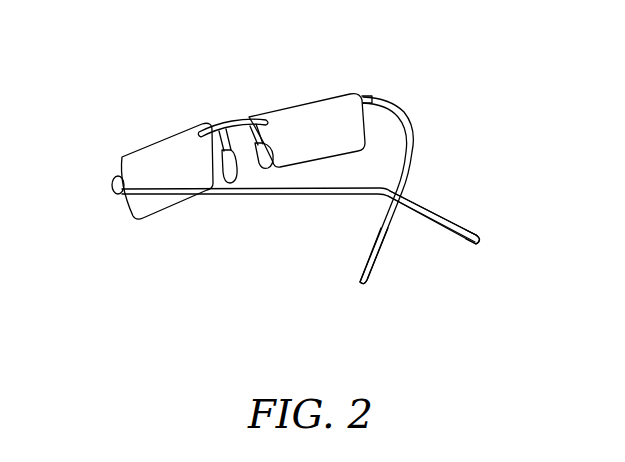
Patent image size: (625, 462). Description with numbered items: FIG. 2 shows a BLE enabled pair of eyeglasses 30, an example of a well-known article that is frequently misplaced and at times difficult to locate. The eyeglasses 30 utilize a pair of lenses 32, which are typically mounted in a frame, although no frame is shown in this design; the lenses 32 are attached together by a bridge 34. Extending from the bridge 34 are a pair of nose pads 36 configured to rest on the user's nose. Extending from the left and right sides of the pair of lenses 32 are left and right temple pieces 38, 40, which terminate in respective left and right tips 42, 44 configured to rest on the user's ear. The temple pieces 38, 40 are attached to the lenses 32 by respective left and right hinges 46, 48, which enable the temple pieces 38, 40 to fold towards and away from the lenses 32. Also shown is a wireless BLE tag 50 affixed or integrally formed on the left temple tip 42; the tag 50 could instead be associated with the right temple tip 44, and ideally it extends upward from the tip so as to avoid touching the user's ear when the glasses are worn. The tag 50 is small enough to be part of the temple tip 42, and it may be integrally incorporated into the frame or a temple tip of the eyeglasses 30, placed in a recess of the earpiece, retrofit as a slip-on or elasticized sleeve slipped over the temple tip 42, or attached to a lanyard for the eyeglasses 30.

The eyeglasses 30 is at (172, 112).
The lenses 32 is at (288, 114).
The bridge 34 is at (226, 112).
The nose pads 36 is at (280, 148).
The left temple piece 38 is at (195, 205).
The right temple piece 40 is at (418, 140).
The left temple tip 42 is at (441, 205).
The right temple tip 44 is at (372, 240).
The left hinge 46 is at (112, 160).
The right hinge 48 is at (375, 87).
The wireless BLE tag 50 is at (472, 220).